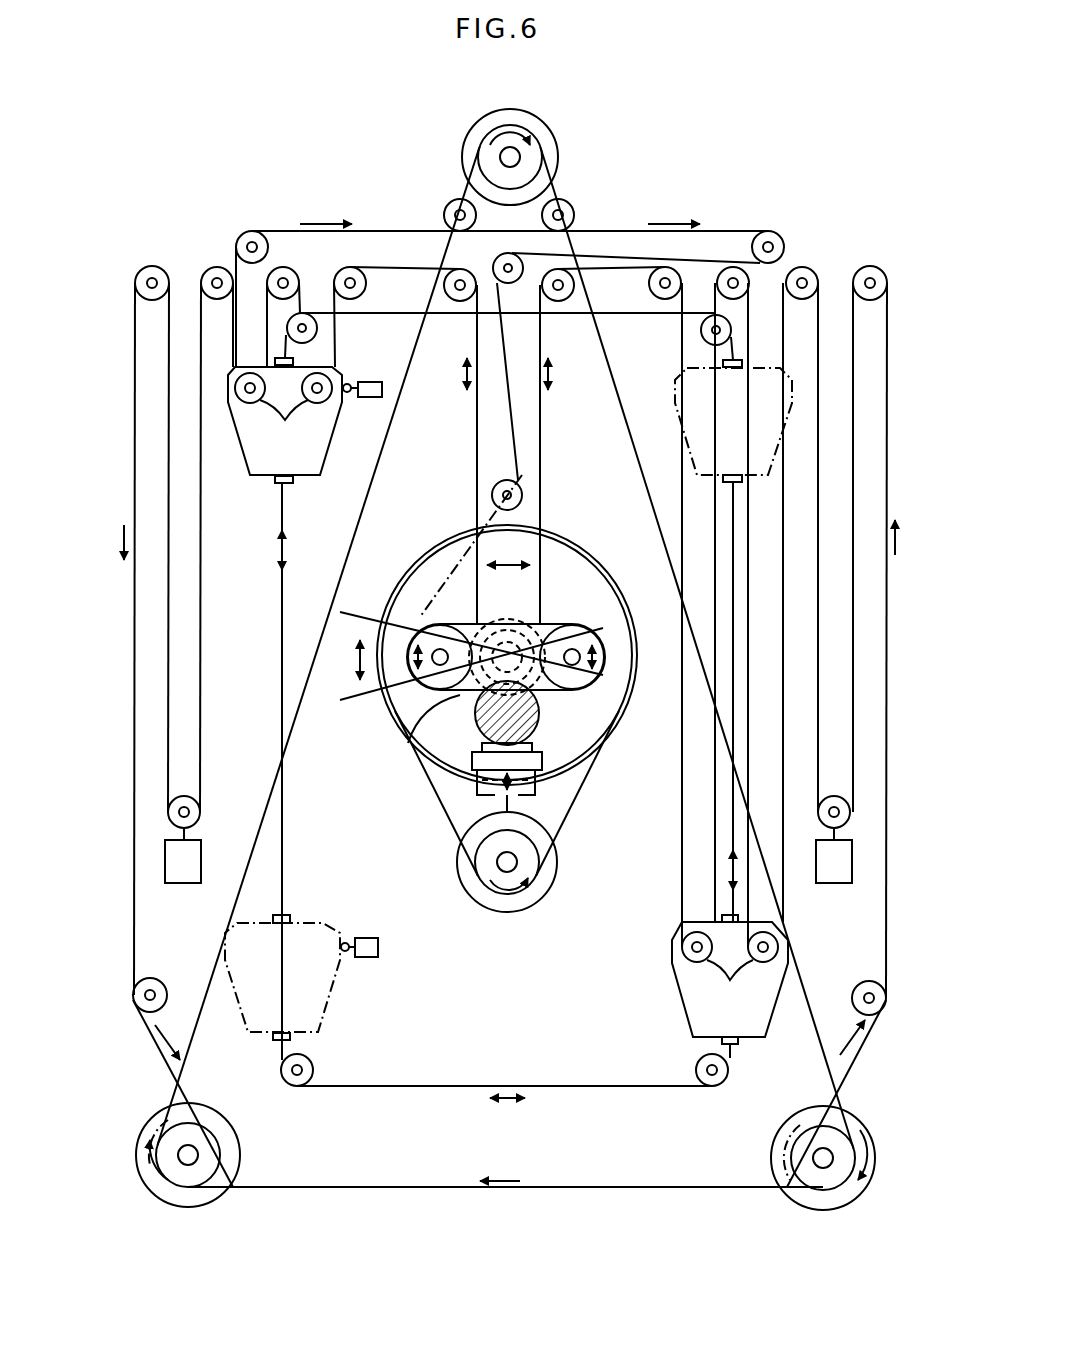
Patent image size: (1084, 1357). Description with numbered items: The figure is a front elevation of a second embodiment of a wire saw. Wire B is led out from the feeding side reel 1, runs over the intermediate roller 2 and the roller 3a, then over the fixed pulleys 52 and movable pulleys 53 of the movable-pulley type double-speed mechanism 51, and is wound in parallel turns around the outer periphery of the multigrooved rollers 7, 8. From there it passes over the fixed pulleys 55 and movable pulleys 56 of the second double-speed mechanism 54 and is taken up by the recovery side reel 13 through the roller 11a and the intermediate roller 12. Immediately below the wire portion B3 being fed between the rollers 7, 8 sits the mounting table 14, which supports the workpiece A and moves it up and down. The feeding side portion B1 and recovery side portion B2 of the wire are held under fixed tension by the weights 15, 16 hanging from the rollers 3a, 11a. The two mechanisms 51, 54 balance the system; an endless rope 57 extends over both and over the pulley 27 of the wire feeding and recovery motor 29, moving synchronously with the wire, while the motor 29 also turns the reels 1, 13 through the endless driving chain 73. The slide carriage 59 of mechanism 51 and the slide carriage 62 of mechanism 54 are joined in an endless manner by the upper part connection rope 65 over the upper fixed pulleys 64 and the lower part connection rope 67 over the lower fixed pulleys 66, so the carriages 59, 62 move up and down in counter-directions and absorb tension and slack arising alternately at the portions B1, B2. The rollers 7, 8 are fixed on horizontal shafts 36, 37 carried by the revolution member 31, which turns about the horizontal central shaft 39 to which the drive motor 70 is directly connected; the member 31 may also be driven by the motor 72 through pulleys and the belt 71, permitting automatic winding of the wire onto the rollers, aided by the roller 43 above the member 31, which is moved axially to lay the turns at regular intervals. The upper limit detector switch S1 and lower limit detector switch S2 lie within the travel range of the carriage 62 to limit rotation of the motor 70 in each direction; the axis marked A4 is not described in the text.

The feeding side reel 1 is at (800, 1195).
The intermediate roller 2 is at (872, 268).
The roller 3a is at (840, 815).
The multigrooved roller 7 is at (573, 625).
The multigrooved roller 8 is at (430, 627).
The roller 11a is at (178, 812).
The intermediate roller 12 is at (152, 268).
The recovery side reel 13 is at (210, 1192).
The mounting table 14 is at (515, 760).
The weight 15 is at (852, 867).
The weight 16 is at (175, 866).
The pulley 27 is at (528, 148).
The wire feeding and recovery motor 29 is at (470, 137).
The revolution member 31 is at (427, 577).
The horizontal shaft 36 is at (575, 660).
The horizontal shaft 37 is at (437, 660).
The horizontal central shaft 39 is at (517, 670).
The roller 43 is at (520, 493).
The movable-pulley type double-speed mechanism 51 is at (676, 994).
The fixed pulleys 52 is at (600, 258).
The movable pulleys 53 is at (730, 979).
The movable-pulley type double-speed mechanism 54 is at (250, 482).
The fixed pulleys 55 is at (343, 275).
The movable pulleys 56 is at (285, 425).
The endless rope 57 is at (716, 229).
The slide carriage 59 is at (755, 1025).
The slide carriage 62 is at (306, 468).
The upper fixed pulleys 64 is at (312, 333).
The upper part connection rope 65 is at (610, 313).
The lower fixed pulleys 66 is at (298, 1084).
The lower part connection rope 67 is at (435, 1086).
The drive motor 70 is at (500, 650).
The belt 71 is at (432, 788).
The motor 72 is at (518, 902).
The endless driving chain 73 is at (572, 1190).
The workpiece A is at (537, 780).
The axis A4 is at (468, 570).
The wire B is at (887, 458).
The feeding side portion of wire B1 is at (818, 655).
The recovery side portion of wire B2 is at (199, 598).
The wire portion between multigrooved rollers B3 is at (470, 690).
The upper limit detector switch S1 is at (382, 392).
The lower limit detector switch S2 is at (378, 950).